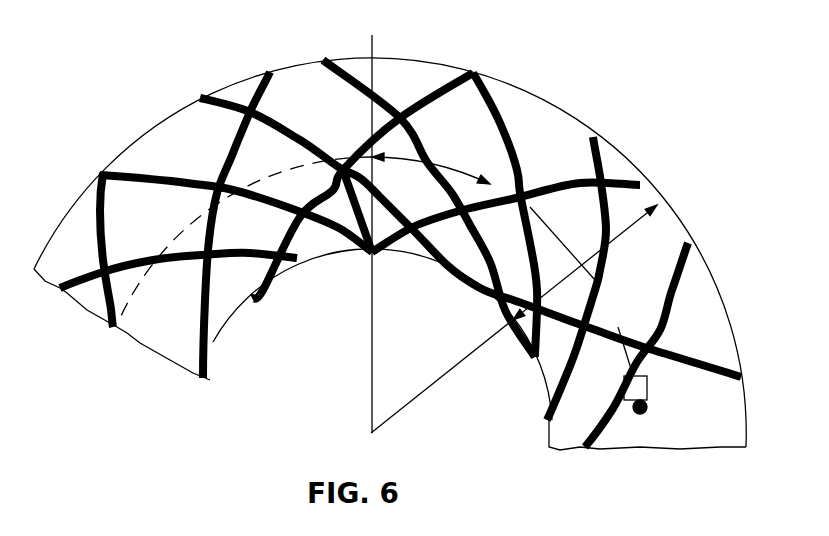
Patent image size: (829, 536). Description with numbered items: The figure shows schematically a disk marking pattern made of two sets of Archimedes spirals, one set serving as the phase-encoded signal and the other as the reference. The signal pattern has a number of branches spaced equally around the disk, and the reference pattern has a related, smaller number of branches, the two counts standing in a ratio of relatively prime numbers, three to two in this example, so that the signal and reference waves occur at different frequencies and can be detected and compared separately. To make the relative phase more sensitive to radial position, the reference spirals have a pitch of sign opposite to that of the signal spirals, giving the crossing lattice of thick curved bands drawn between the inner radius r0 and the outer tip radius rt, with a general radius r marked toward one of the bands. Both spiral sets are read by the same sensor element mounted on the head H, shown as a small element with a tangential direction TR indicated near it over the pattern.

The radius to a lattice ring r is at (515, 202).
The inner (hub) radius r0 is at (371, 433).
The outer (tip) radius rt is at (743, 410).
The tangential direction TR is at (624, 354).
The head H is at (647, 386).